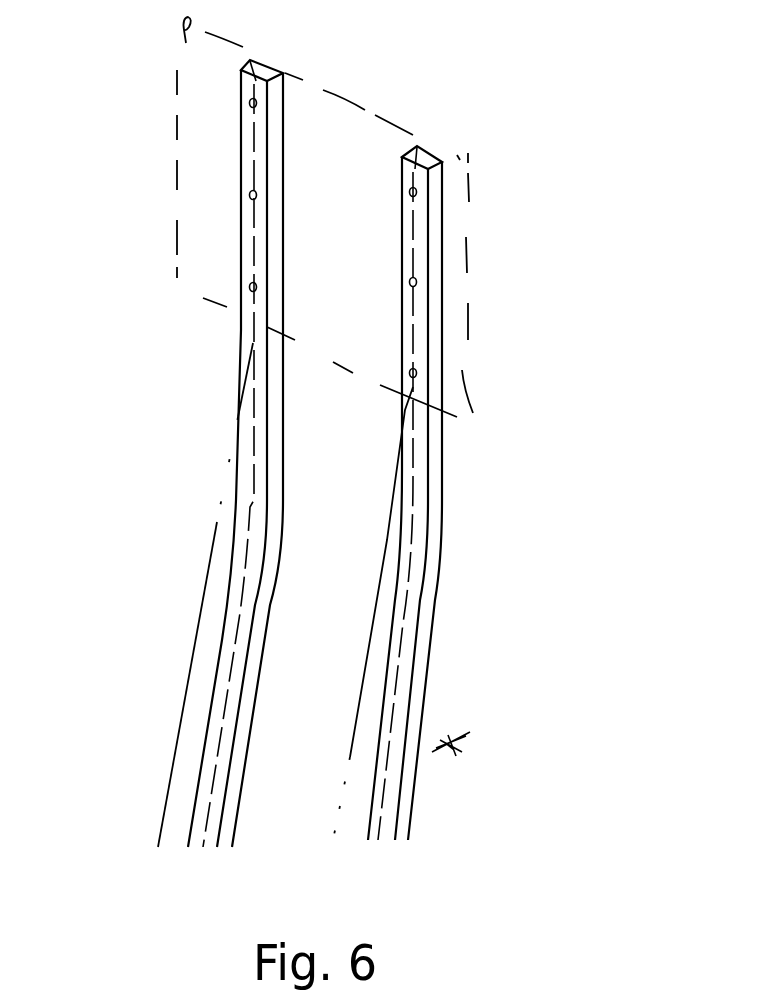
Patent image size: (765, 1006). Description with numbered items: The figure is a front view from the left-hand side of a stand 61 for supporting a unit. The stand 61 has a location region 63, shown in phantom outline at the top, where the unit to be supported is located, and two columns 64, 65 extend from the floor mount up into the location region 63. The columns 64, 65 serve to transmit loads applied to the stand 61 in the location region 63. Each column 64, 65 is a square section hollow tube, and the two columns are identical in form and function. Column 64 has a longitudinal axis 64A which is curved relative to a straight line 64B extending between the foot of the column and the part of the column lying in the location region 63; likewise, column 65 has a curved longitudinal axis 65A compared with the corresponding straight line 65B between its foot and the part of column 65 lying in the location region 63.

The stand 61 is at (432, 752).
The location region 63 is at (468, 275).
The column 64 is at (487, 493).
The longitudinal axis 64A is at (405, 663).
The straight line 64B is at (353, 750).
The column 65 is at (169, 453).
The longitudinal axis 65A is at (250, 563).
The straight line 65B is at (193, 745).